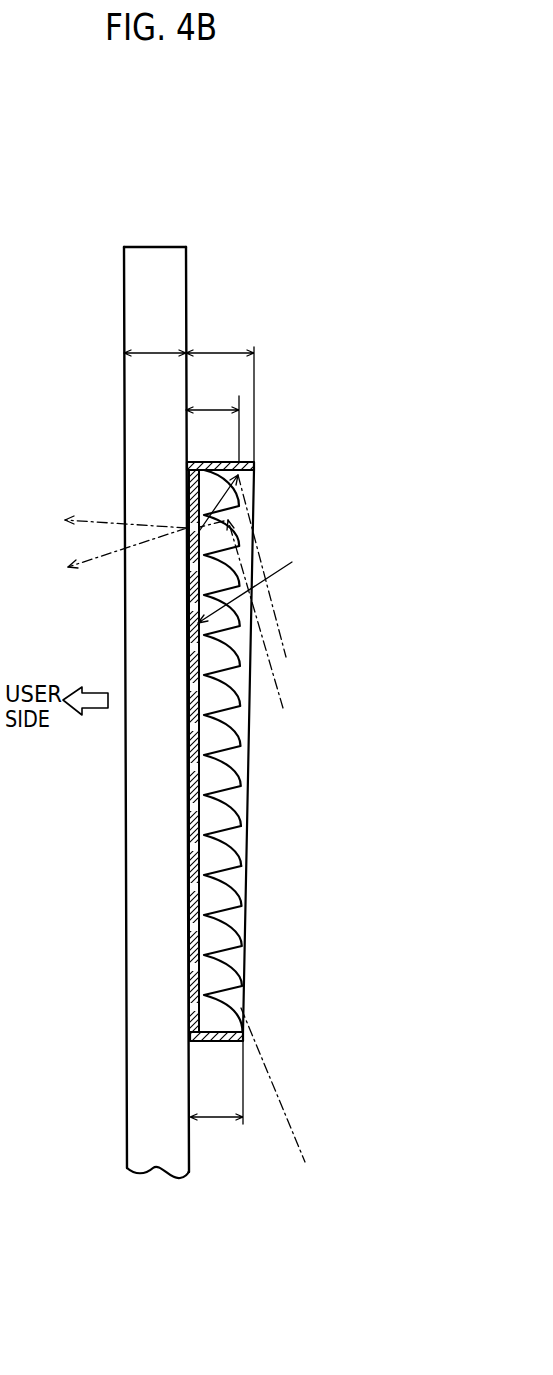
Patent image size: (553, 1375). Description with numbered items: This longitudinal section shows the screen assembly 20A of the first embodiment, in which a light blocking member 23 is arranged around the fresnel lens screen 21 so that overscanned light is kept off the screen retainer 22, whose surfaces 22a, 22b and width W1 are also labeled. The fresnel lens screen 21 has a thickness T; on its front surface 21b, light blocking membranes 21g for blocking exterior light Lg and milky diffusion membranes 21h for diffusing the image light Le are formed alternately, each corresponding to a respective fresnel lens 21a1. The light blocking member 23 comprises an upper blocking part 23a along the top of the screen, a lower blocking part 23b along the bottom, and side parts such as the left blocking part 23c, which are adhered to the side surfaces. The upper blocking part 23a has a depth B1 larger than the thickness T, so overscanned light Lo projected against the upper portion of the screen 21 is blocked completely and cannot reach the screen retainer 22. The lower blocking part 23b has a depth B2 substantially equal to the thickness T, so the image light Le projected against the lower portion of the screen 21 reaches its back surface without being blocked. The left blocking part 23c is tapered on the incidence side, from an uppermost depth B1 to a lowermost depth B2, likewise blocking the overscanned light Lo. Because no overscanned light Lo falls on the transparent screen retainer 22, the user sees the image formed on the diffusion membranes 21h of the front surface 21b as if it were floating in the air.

The display device 20A is at (203, 181).
The screen retainer 22 is at (138, 237).
The front surface of light guide plate 22a is at (187, 278).
The back surface of light guide plate 22b is at (124, 337).
The light blocking member 23 is at (261, 478).
The upper blocking part 23a is at (227, 461).
The lower blocking part 23b is at (210, 1042).
The left blocking part 23c is at (238, 757).
The fresnel lens screen 21 is at (247, 840).
The fresnel lenses 21a1 is at (238, 803).
The front surface 21b is at (187, 490).
The milky diffusion membranes 21h is at (187, 528).
The light blocking membranes 21g is at (187, 631).
The width of light guide plate W1 is at (155, 339).
The depth of upper blocking part B1 is at (220, 392).
The depth of lower blocking part B2 is at (216, 1082).
The thickness of fresnel lens screen T is at (212, 422).
The exterior light Lg is at (288, 567).
The overscanned light Lo is at (284, 630).
The image light Le is at (280, 688).